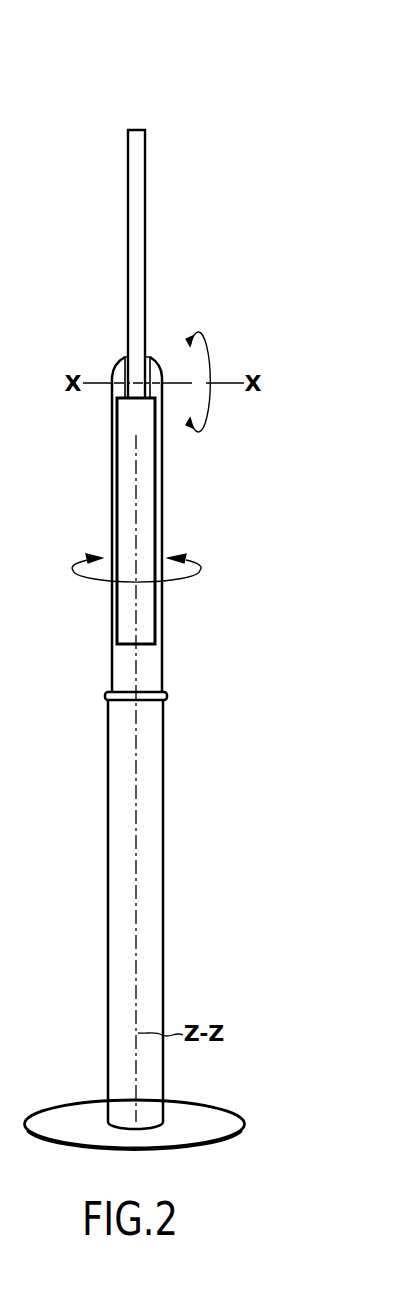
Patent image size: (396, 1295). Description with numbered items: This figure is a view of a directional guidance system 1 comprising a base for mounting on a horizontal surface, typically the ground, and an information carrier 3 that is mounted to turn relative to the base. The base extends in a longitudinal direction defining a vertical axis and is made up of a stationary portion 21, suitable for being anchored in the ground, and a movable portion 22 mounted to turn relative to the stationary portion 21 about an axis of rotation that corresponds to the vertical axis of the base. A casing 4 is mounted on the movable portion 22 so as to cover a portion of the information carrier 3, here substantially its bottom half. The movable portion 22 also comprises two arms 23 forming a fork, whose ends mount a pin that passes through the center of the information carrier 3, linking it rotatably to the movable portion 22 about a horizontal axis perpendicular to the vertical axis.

The directional guidance system 1 is at (155, 100).
The information carrier 3 is at (156, 147).
The casing 4 is at (125, 612).
The stationary portion 21 is at (148, 864).
The movable portion 22 is at (148, 671).
The arms 23 is at (116, 364).